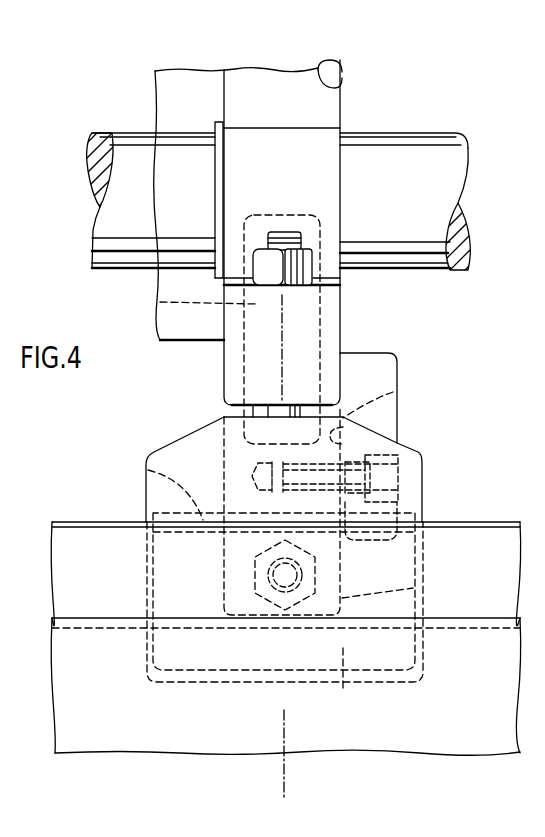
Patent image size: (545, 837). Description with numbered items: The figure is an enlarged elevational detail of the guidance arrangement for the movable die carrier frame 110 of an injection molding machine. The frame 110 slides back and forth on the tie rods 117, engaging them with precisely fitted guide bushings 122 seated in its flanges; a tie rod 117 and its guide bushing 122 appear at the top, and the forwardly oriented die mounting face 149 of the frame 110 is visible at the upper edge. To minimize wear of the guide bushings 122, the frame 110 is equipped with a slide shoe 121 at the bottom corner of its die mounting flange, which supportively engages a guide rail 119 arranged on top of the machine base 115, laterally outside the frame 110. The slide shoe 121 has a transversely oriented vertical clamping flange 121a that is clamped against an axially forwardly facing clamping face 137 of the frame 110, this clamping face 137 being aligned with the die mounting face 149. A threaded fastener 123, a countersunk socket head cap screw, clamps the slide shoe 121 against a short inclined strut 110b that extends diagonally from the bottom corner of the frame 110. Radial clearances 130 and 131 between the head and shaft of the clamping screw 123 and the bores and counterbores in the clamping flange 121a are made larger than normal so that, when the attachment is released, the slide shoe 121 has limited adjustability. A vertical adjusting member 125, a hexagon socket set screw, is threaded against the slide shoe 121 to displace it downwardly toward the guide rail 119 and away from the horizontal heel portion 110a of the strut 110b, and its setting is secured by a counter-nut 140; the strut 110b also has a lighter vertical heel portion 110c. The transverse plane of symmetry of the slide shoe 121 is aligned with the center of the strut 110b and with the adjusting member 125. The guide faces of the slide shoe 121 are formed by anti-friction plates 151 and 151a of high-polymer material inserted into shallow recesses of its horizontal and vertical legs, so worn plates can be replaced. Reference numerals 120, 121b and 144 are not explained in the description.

The movable die carrier frame 110 is at (253, 92).
The horizontal heel portion 110a is at (307, 330).
The inclined strut 110b is at (156, 301).
The vertical heel portion 110c is at (415, 590).
The machine base 115 is at (183, 723).
The tie rods 117 is at (405, 155).
The guide rail 119 is at (78, 565).
The plate top surface 120 is at (95, 520).
The slide shoe 121 is at (200, 460).
The clamping flange 121a is at (378, 420).
The bracket lower portion 121b is at (422, 658).
The guide bushing 122 is at (217, 198).
The threaded fastener 123 is at (410, 470).
The vertical adjusting member 125 is at (282, 232).
The radial clearance 130 is at (410, 493).
The radial clearance 131 is at (358, 515).
The clamping face 137 is at (393, 392).
The counter-nut 140 is at (302, 268).
The tab 144 is at (253, 416).
The die mounting face 149 is at (330, 63).
The anti-friction plate 151 is at (147, 470).
The anti-friction plate 151a is at (343, 692).